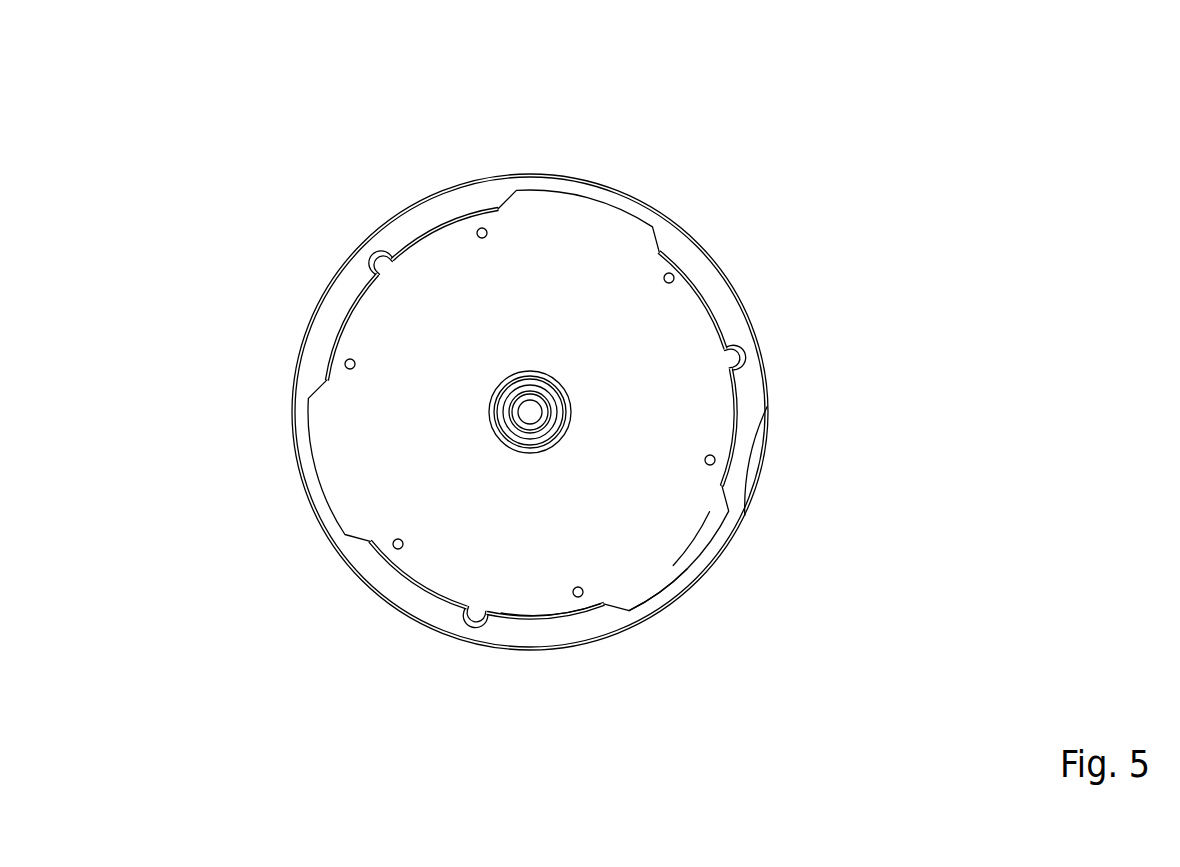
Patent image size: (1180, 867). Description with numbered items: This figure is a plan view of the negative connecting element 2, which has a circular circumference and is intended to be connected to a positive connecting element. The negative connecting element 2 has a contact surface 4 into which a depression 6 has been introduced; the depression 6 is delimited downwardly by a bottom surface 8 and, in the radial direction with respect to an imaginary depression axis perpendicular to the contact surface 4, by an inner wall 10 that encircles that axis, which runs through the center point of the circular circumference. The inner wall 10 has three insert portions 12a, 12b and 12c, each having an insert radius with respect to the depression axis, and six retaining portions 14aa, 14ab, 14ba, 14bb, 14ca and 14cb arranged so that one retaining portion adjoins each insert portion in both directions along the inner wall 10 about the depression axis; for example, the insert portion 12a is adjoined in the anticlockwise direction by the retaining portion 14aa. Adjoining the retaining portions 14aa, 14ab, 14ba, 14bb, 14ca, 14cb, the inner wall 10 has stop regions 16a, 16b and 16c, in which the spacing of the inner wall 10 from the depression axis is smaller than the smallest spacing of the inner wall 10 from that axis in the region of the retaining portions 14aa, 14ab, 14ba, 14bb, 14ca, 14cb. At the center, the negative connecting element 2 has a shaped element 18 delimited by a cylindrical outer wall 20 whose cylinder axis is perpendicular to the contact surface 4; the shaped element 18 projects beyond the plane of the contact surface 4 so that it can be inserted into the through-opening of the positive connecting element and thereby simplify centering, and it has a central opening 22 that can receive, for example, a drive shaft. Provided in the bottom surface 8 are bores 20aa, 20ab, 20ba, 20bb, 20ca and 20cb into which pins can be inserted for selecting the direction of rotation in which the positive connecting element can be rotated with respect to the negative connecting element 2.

The negative connecting element 2 is at (593, 612).
The contact surface 4 is at (743, 477).
The depression 6 is at (663, 532).
The bottom surface 8 is at (522, 592).
The inner wall 10 is at (667, 590).
The insert portion 12a is at (315, 482).
The insert portion 12b is at (593, 197).
The insert portion 12c is at (717, 530).
The retaining portion 14aa is at (417, 588).
The retaining portion 14ab is at (337, 333).
The retaining portion 14ba is at (440, 223).
The retaining portion 14bb is at (707, 307).
The retaining portion 14ca is at (733, 410).
The retaining portion 14cb is at (560, 617).
The stop region 16a is at (477, 603).
The stop region 16b is at (386, 268).
The stop region 16c is at (718, 360).
The shaped element 18 is at (520, 452).
The cylindrical outer wall 20 is at (556, 448).
The hole 20aa is at (394, 549).
The bore 20ab is at (354, 367).
The bore 20ba is at (484, 228).
The bore 20bb is at (673, 276).
The bore 20ca is at (686, 437).
The bore 20cb is at (574, 588).
The central opening 22 is at (531, 411).